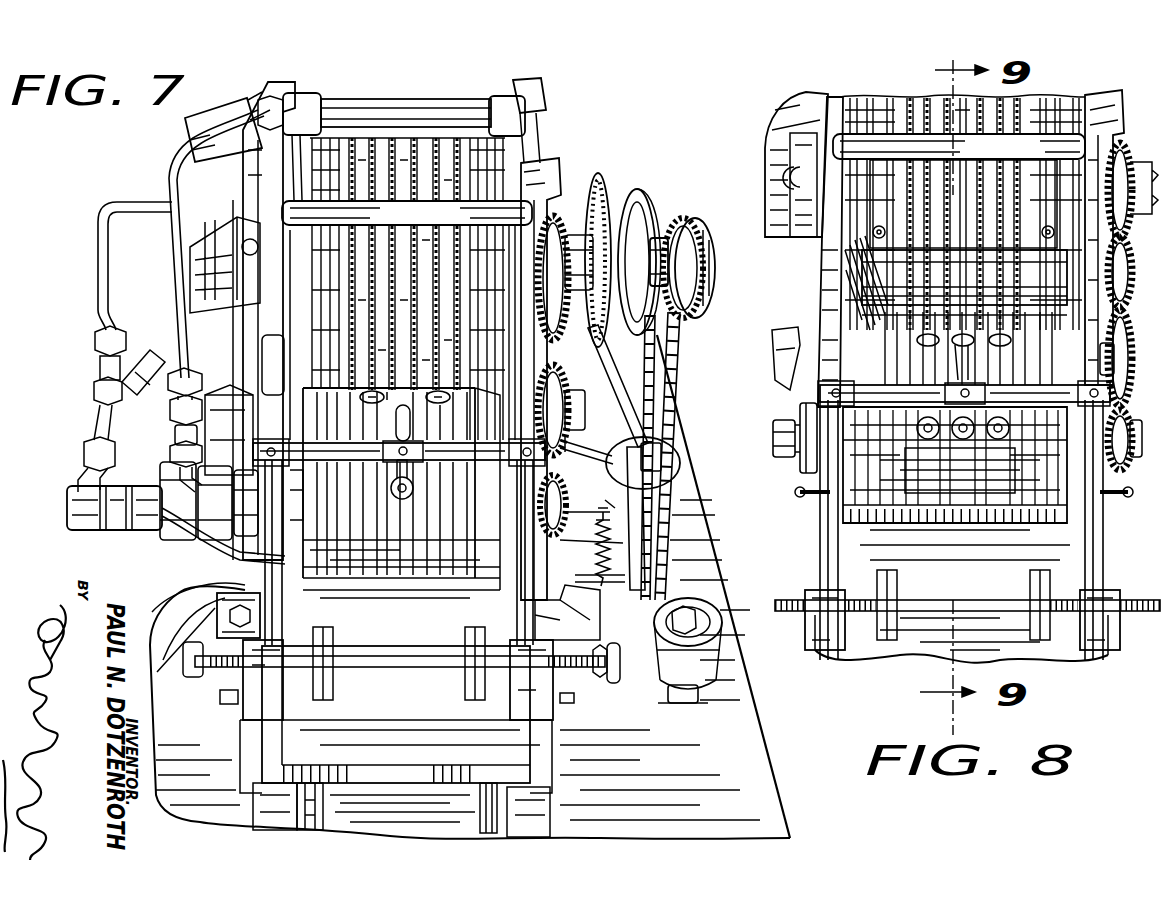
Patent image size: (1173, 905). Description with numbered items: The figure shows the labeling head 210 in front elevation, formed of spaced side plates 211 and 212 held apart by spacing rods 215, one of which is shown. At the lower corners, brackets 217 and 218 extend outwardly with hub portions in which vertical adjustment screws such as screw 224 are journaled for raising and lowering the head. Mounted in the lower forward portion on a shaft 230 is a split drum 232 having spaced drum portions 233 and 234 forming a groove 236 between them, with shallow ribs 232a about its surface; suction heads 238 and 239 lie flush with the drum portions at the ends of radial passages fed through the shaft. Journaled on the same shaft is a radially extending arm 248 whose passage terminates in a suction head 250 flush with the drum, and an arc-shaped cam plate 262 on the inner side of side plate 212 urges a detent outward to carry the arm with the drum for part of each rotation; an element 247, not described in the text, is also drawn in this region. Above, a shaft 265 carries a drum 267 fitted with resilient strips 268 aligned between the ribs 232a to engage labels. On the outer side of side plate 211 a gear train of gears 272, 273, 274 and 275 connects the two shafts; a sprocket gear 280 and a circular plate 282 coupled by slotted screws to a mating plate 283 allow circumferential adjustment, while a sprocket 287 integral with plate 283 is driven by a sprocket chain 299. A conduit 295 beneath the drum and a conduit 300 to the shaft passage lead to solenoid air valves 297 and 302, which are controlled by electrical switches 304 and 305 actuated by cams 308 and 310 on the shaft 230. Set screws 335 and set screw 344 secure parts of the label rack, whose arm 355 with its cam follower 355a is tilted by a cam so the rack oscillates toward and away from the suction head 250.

In FIG. 7, the labeling head 210 is at (552, 153).
In FIG. 7, the side plate 211 is at (548, 182).
In FIG. 8, the side plate 211 is at (1108, 120).
In FIG. 7, the side plate 212 is at (260, 197).
In FIG. 8, the side plate 212 is at (816, 108).
In FIG. 7, the spacing rod 215 is at (407, 213).
In FIG. 8, the spacing rod 215 is at (959, 146).
In FIG. 7, the bracket 217 is at (724, 644).
In FIG. 7, the bracket 218 is at (690, 452).
In FIG. 7, the vertical adjustment screw 224 is at (700, 697).
In FIG. 7, the shaft 230 is at (175, 538).
In FIG. 7, the drum 232 is at (448, 441).
In FIG. 8, the ribs 232a is at (926, 441).
In FIG. 7, the drum portion 233 is at (368, 500).
In FIG. 8, the drum portion 233 is at (932, 468).
In FIG. 7, the drum portion 234 is at (438, 510).
In FIG. 8, the drum portion 234 is at (1022, 472).
In FIG. 7, the groove 236 is at (340, 388).
In FIG. 7, the suction head 238 is at (283, 368).
In FIG. 8, the suction head 238 is at (796, 490).
In FIG. 7, the suction head 239 is at (445, 398).
In FIG. 8, the suction head 239 is at (1008, 434).
In FIG. 7, the slotted plate 247 is at (330, 688).
In FIG. 8, the slotted plate 247 is at (889, 612).
In FIG. 7, the radially extending arm 248 is at (467, 680).
In FIG. 8, the radially extending arm 248 is at (1030, 597).
In FIG. 7, the suction head 250 is at (410, 530).
In FIG. 8, the suction head 250 is at (965, 442).
In FIG. 7, the arc-shaped cam plate 262 is at (292, 490).
In FIG. 8, the arc-shaped cam plate 262 is at (812, 425).
In FIG. 7, the shaft 265 is at (650, 265).
In FIG. 7, the drum 267 is at (497, 165).
In FIG. 8, the drum 267 is at (967, 272).
In FIG. 7, the resilient strips 268 is at (440, 142).
In FIG. 8, the resilient strips 268 is at (1012, 250).
In FIG. 7, the gear 272 is at (623, 543).
In FIG. 7, the gear 273 is at (556, 430).
In FIG. 7, the gear 274 is at (556, 372).
In FIG. 7, the gear 275 is at (636, 215).
In FIG. 7, the sprocket gear 280 is at (596, 205).
In FIG. 7, the circular plate 282 is at (683, 322).
In FIG. 7, the mating plate 283 is at (673, 228).
In FIG. 7, the sprocket 287 is at (675, 303).
In FIG. 7, the conduit 295 is at (195, 575).
In FIG. 7, the air valve 297 is at (235, 135).
In FIG. 7, the sprocket chain 299 is at (678, 398).
In FIG. 7, the conduit 300 is at (104, 300).
In FIG. 7, the air valve 302 is at (175, 240).
In FIG. 7, the electrical switch 304 is at (252, 420).
In FIG. 7, the electrical switch 305 is at (220, 407).
In FIG. 7, the cam 308 is at (232, 548).
In FIG. 7, the cam 310 is at (173, 472).
In FIG. 7, the set screws 335 is at (222, 697).
In FIG. 7, the set screw 344 is at (543, 563).
In FIG. 8, the set screw 344 is at (814, 500).
In FIG. 7, the arm 355 is at (668, 528).
In FIG. 7, the cam follower 355a is at (681, 462).